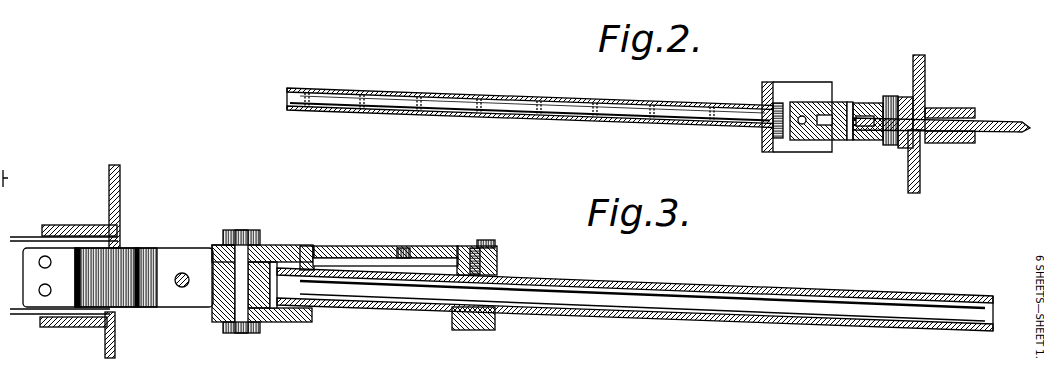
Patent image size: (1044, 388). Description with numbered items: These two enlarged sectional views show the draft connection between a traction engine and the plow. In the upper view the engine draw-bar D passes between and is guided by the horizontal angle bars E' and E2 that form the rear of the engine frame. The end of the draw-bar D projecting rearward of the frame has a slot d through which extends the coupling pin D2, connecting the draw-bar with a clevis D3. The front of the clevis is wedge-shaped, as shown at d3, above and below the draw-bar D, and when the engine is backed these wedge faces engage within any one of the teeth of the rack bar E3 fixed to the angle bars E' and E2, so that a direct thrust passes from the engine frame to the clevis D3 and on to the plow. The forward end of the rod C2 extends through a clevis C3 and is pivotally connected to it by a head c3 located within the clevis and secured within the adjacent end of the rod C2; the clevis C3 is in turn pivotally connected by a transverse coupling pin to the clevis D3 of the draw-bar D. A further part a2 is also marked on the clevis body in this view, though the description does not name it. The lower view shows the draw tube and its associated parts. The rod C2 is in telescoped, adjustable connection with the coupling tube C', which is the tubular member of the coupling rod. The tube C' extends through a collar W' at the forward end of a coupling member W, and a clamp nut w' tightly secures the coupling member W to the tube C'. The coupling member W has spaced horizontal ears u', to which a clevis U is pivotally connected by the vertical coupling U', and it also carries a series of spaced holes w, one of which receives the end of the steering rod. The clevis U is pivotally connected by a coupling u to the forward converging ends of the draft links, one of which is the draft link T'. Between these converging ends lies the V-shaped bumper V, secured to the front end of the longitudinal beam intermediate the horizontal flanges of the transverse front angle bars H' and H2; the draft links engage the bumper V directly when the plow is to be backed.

In FIG. 2, the rod C2 is at (505, 104).
In FIG. 2, the clevis C3 is at (793, 93).
In FIG. 2, the head c3 is at (765, 138).
In FIG. 2, the body block a2 is at (801, 126).
In FIG. 2, the clevis D3 is at (848, 101).
In FIG. 2, the coupling pin D2 is at (851, 141).
In FIG. 2, the wedge-shaped front of clevis d3 is at (887, 97).
In FIG. 2, the slot d is at (868, 138).
In FIG. 2, the horizontal angle bar E' is at (941, 91).
In FIG. 2, the horizontal angle bar E2 is at (921, 175).
In FIG. 2, the rack bar E3 is at (903, 150).
In FIG. 2, the draw-bar D is at (1007, 121).
In FIG. 3, the transverse front angle bar H' is at (65, 261).
In FIG. 3, the transverse front angle bar H2 is at (72, 326).
In FIG. 3, the draft link T' is at (118, 261).
In FIG. 3, the V-shaped bumper V is at (120, 262).
In FIG. 3, the coupling u is at (197, 267).
In FIG. 3, the clevis U is at (249, 300).
In FIG. 3, the vertical coupling U' is at (262, 233).
In FIG. 3, the horizontal ears u' is at (255, 294).
In FIG. 3, the coupling member W is at (379, 242).
In FIG. 3, the spaced holes w is at (407, 239).
In FIG. 3, the collar W' is at (501, 285).
In FIG. 3, the clamp nut w' is at (499, 243).
In FIG. 3, the coupling tube C' is at (635, 288).